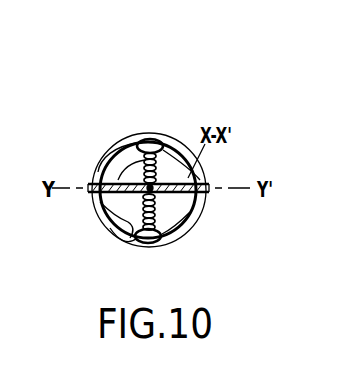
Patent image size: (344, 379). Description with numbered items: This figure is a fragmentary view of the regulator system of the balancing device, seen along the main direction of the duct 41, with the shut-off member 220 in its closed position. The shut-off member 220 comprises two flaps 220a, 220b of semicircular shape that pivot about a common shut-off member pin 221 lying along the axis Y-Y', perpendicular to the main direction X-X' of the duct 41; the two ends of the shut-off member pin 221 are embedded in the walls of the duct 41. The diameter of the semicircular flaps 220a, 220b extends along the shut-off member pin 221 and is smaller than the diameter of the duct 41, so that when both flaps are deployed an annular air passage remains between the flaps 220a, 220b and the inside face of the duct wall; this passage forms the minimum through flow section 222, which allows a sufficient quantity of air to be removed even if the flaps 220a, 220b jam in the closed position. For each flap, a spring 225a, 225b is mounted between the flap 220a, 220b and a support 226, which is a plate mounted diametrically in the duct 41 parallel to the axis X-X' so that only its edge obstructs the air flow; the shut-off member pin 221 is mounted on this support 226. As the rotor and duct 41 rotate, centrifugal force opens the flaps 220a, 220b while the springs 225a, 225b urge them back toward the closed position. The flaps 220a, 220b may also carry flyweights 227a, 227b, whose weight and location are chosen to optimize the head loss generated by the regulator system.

The shut-off member 220 is at (110, 137).
The flap 220a is at (115, 170).
The flap 220b is at (101, 219).
The spring 225a is at (112, 150).
The spring 225b is at (123, 236).
The flyweight 227a is at (143, 140).
The flyweight 227b is at (150, 243).
The duct 41 is at (173, 145).
The shut-off member pin 221 is at (201, 184).
The support 226 is at (200, 194).
The minimum through flow section 222 is at (177, 231).